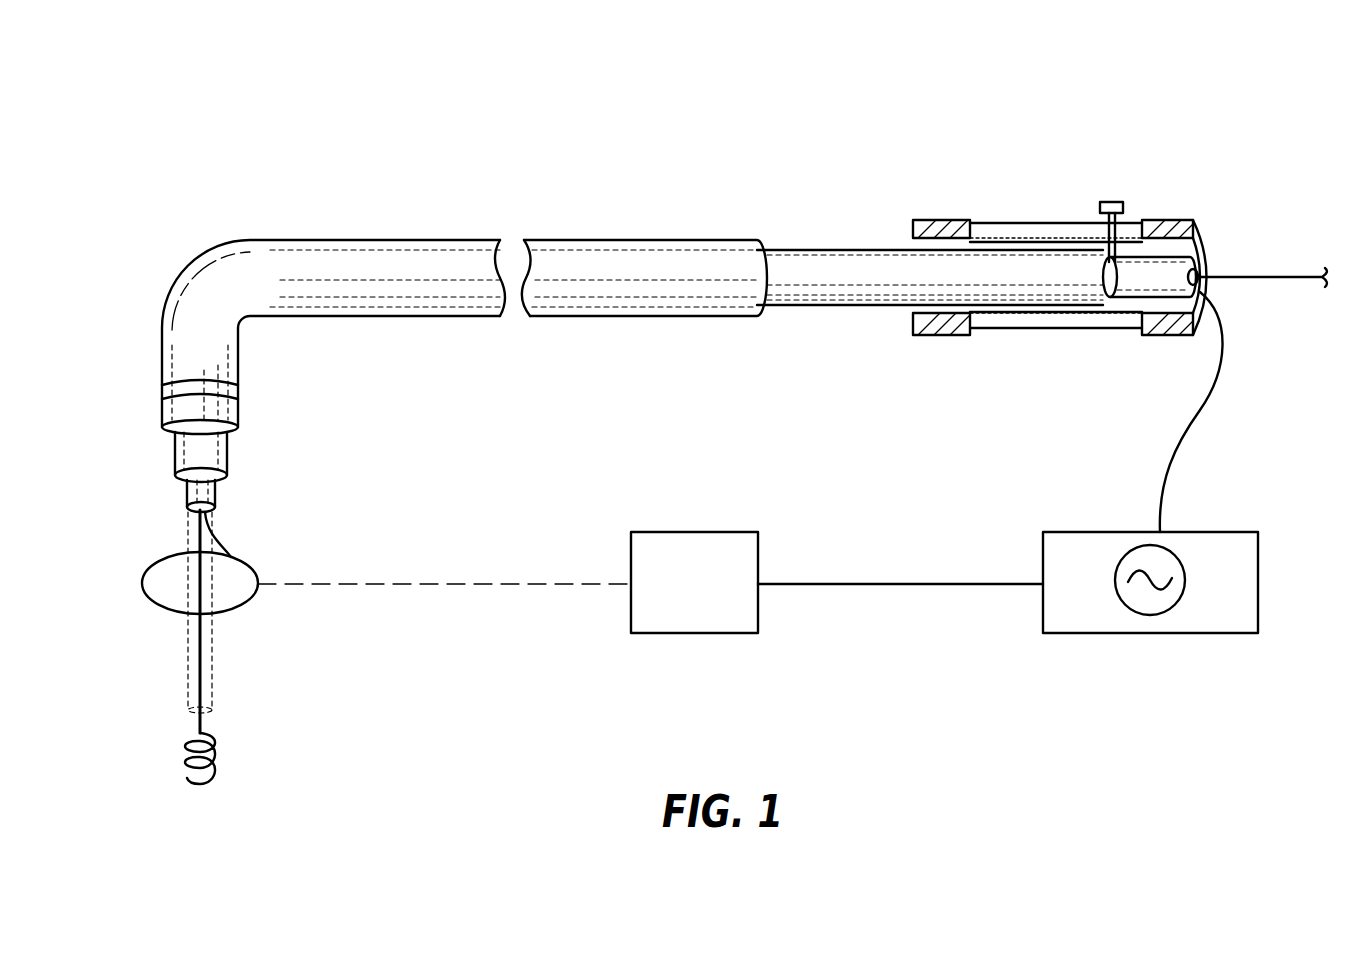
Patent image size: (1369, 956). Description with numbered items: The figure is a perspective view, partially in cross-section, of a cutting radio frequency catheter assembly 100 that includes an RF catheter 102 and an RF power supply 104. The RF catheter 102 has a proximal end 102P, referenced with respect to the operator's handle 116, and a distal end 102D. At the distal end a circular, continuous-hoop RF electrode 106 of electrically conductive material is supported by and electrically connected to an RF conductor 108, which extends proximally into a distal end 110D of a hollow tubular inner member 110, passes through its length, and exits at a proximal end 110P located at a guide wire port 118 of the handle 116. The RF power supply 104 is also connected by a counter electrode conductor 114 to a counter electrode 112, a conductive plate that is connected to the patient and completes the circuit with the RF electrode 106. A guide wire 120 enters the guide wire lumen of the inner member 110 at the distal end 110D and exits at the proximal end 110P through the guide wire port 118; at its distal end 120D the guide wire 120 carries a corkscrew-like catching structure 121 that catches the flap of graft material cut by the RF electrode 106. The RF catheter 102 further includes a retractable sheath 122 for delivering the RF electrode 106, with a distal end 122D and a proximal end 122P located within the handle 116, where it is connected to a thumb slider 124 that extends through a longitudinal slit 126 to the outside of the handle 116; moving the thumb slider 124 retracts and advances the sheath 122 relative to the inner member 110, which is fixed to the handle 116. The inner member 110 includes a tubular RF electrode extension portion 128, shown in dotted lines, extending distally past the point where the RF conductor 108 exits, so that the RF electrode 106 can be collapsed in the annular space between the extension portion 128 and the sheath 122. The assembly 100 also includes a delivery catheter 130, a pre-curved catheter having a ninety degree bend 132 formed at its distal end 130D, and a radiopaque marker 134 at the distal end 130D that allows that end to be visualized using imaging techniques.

The cutting RF catheter assembly 100 is at (430, 115).
The RF catheter 102 is at (842, 210).
The distal end of RF catheter 102D is at (150, 527).
The proximal end of RF catheter 102P is at (1232, 225).
The RF power supply 104 is at (1103, 628).
The RF electrode 106 is at (245, 615).
The RF conductor 108 is at (222, 535).
The inner member 110 is at (217, 495).
The distal end of inner member 110D is at (187, 495).
The proximal end of inner member 110P is at (1150, 245).
The counter electrode 112 is at (712, 595).
The counter electrode conductor 114 is at (865, 583).
The handle 116 is at (1042, 155).
The guide wire port 118 is at (1200, 270).
The guide wire 120 is at (1270, 278).
The distal end of guide wire 120D is at (180, 748).
The catching structure 121 is at (215, 760).
The retractable sheath 122 is at (226, 458).
The distal end of sheath 122D is at (180, 458).
The proximal end of sheath 122P is at (1060, 290).
The thumb slider 124 is at (1118, 200).
The longitudinal slit 126 is at (1015, 222).
The RF electrode extension portion 128 is at (214, 690).
The delivery catheter 130 is at (405, 245).
The distal end of delivery catheter 130D is at (170, 335).
The bend 132 is at (175, 283).
The radiopaque marker 134 is at (236, 392).